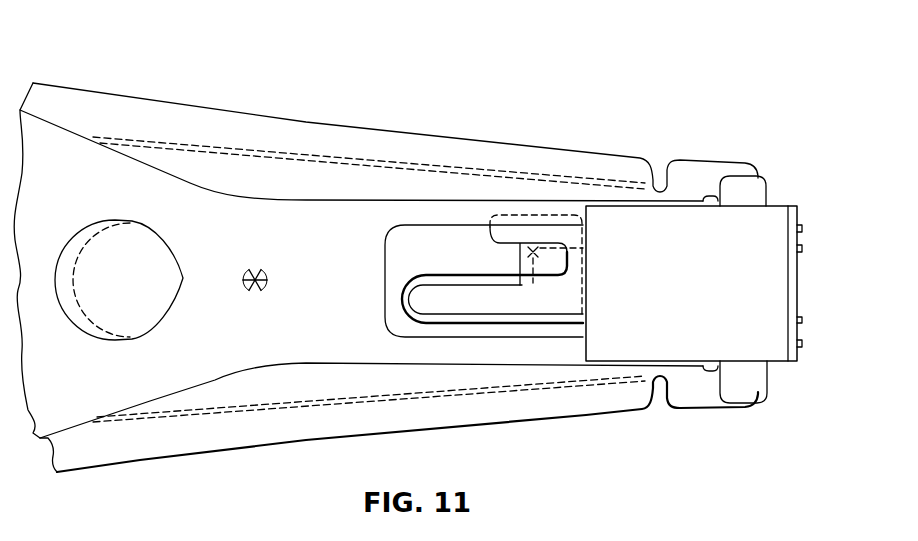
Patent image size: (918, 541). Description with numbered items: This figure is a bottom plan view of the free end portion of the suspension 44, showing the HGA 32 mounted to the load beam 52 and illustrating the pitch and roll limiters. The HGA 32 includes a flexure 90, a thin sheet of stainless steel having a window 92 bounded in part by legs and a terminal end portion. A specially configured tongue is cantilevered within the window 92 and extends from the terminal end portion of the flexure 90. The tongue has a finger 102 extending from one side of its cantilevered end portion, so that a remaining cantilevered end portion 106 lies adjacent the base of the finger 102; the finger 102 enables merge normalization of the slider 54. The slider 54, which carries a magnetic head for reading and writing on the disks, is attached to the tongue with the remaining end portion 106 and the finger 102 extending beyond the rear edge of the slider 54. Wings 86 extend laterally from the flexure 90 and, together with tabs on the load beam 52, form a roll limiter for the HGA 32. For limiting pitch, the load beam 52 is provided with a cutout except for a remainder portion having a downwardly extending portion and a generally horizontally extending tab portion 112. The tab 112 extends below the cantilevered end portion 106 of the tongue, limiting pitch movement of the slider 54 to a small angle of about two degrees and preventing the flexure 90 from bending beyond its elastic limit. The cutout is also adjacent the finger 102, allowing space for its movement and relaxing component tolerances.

The HGA 32 is at (376, 198).
The suspension 44 is at (222, 88).
The load beam 52 is at (90, 88).
The slider 54 is at (785, 283).
The wings 86 is at (744, 180).
The flexure 90 is at (300, 232).
The window 92 is at (405, 256).
The finger 102 is at (418, 304).
The remaining cantilevered end portion 106 is at (532, 240).
The tab portion 112 is at (554, 267).